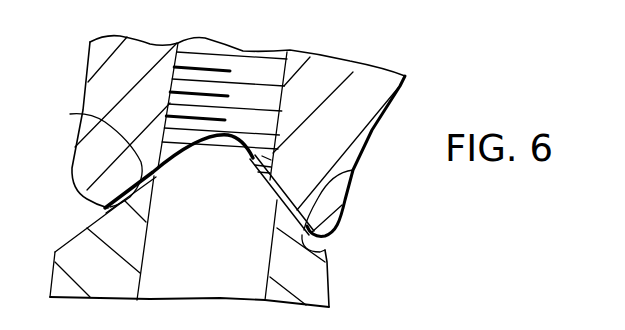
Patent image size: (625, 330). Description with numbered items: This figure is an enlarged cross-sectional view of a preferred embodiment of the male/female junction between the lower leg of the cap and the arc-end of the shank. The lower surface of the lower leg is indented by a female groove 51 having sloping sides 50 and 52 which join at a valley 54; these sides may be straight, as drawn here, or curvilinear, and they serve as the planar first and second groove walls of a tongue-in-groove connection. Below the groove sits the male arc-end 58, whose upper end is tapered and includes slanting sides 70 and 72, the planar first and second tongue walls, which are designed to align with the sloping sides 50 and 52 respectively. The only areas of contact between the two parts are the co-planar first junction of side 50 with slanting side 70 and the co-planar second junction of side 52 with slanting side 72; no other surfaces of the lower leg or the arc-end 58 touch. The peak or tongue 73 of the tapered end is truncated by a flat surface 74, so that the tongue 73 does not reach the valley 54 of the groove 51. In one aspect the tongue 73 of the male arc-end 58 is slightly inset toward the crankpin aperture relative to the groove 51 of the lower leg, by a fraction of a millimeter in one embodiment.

The sloping side 50 is at (70, 114).
The female groove 51 is at (262, 156).
The sloping side 52 is at (353, 170).
The valley 54 is at (232, 138).
The male arc-end 58 is at (318, 289).
The slanting side 70 is at (130, 198).
The slanting side 72 is at (322, 251).
The tongue 73 is at (214, 265).
The flat surface 74 is at (222, 143).